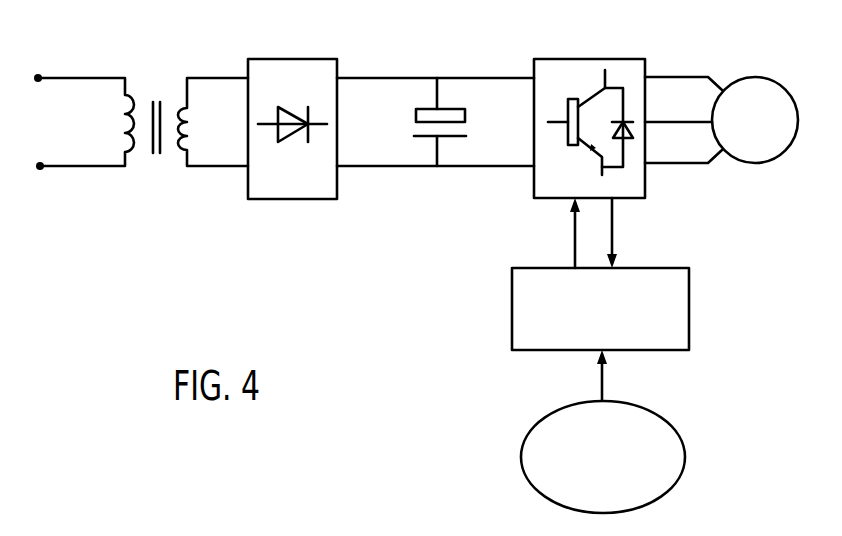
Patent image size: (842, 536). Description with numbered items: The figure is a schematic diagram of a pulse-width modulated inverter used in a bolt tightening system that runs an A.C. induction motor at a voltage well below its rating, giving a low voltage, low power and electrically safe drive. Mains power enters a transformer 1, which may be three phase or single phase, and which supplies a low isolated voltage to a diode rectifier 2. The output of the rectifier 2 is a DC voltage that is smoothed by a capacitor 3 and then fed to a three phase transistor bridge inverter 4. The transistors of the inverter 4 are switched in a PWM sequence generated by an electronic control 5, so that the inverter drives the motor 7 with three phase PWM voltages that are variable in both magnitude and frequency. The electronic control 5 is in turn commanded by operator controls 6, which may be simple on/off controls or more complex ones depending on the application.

The transformer 1 is at (157, 90).
The diode rectifier 2 is at (302, 80).
The capacitor 3 is at (413, 96).
The three phase transistor bridge inverter 4 is at (577, 84).
The electronic control 5 is at (523, 308).
The operator controls 6 is at (530, 457).
The motor 7 is at (765, 160).